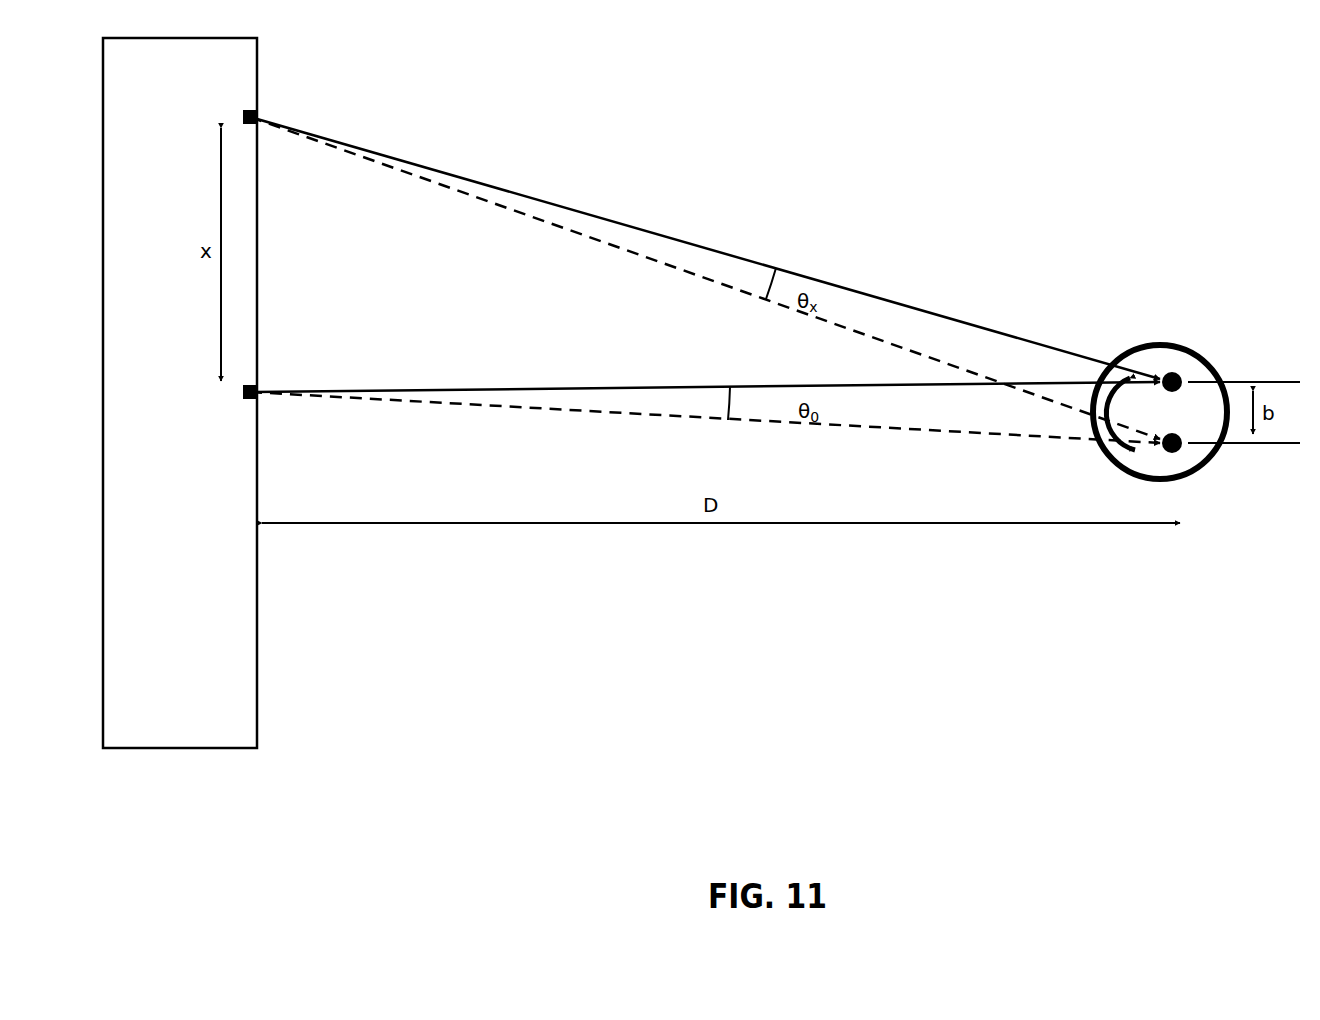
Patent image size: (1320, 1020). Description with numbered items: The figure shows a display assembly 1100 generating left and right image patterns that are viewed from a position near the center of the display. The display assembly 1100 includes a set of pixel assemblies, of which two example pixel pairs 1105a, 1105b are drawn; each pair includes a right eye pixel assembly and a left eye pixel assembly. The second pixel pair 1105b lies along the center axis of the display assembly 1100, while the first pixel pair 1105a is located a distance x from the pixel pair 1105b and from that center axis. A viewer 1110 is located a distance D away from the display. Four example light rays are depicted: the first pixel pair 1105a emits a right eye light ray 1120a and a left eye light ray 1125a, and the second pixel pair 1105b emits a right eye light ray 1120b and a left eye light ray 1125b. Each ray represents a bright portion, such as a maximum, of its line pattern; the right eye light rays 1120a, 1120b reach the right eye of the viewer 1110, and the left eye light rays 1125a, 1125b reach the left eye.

The display assembly 1100 is at (180, 393).
The first pixel pair 1105a is at (241, 105).
The second pixel pair 1105b is at (247, 405).
The viewer 1110 is at (1171, 326).
The right eye light ray 1120a is at (836, 274).
The right eye light ray 1120b is at (630, 382).
The left eye light ray 1125a is at (632, 269).
The left eye light ray 1125b is at (699, 424).